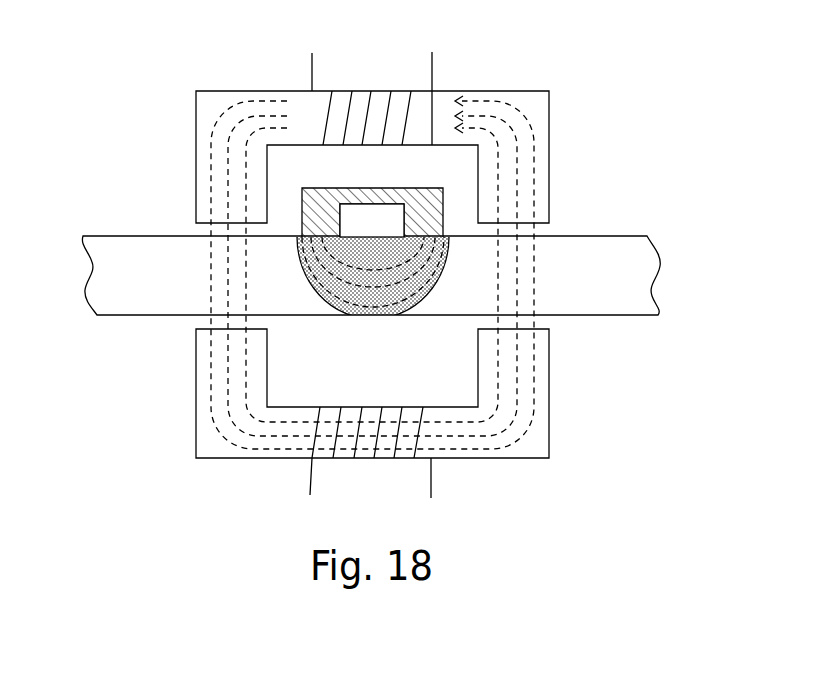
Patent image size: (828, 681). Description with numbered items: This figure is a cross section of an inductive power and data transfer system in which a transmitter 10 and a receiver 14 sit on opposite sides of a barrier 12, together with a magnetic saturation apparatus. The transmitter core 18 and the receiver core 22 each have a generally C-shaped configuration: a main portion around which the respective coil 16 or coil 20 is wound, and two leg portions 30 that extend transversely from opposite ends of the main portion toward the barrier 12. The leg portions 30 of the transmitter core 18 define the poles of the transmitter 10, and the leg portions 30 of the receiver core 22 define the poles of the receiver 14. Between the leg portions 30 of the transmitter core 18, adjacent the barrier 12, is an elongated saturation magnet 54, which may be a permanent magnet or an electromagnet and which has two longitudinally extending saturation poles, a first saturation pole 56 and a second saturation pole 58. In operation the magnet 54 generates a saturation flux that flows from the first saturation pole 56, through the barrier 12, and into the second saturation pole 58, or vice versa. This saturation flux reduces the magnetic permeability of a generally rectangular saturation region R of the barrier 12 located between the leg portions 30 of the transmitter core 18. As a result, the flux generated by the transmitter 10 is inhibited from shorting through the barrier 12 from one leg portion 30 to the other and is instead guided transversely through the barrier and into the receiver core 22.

The transmitter 10 is at (411, 128).
The barrier 12 is at (371, 275).
The receiver 14 is at (411, 427).
The coil 16 is at (362, 84).
The transmitter core 18 is at (225, 89).
The coil 20 is at (363, 403).
The receiver core 22 is at (240, 461).
The leg portions 30 is at (196, 182).
The saturation magnet 54 is at (362, 188).
The first saturation pole 56 is at (302, 210).
The second saturation pole 58 is at (446, 216).
The saturation region R is at (427, 295).